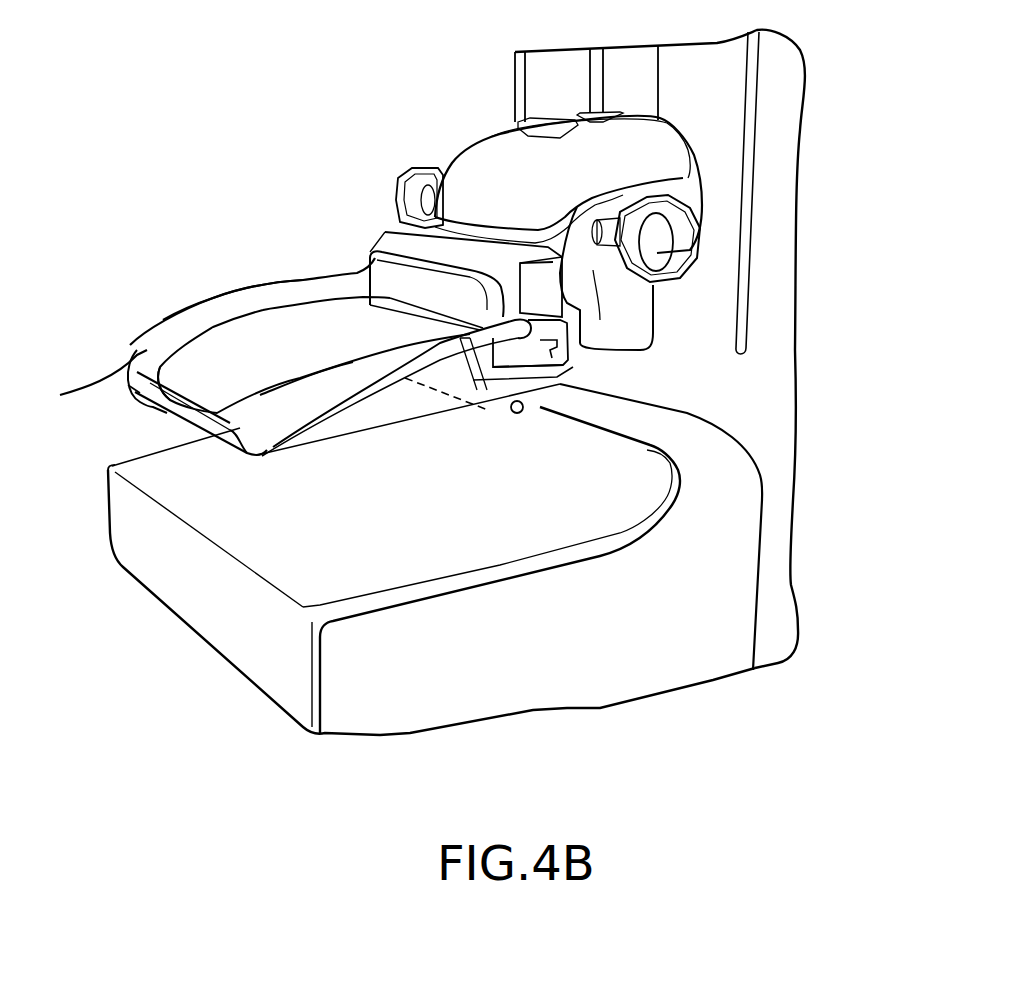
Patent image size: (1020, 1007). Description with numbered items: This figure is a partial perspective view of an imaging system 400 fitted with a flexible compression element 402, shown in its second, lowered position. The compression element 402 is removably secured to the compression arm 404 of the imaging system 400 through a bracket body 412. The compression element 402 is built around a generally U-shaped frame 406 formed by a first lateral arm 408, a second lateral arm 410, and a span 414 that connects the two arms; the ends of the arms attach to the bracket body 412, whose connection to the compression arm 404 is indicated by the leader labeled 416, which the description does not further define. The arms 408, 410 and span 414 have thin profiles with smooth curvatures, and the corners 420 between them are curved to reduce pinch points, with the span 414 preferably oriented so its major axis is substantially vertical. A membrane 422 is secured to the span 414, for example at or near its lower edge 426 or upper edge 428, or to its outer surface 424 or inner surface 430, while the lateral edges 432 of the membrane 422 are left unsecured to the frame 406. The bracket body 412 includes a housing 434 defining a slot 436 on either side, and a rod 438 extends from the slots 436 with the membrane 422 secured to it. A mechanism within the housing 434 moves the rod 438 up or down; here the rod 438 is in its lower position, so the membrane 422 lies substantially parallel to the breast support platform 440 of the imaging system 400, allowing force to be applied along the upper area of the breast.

The imaging system 400 is at (845, 113).
The flexible compression element 402 is at (205, 278).
The compression arm 404 is at (467, 162).
The generally U-shaped frame 406 is at (292, 300).
The first lateral arm 408 is at (190, 323).
The second lateral arm 410 is at (440, 357).
The bracket body 412 is at (565, 353).
The span 414 is at (137, 398).
The post lower end 416 is at (600, 329).
The corners 420 is at (142, 350).
The membrane 422 is at (293, 375).
The outer surface 424 is at (166, 412).
The lower edge 426 is at (178, 441).
The upper edge 428 is at (81, 381).
The inner surface 430 is at (222, 410).
The lateral edges 432 is at (437, 408).
The housing 434 is at (390, 330).
The slot 436 is at (510, 386).
The rod 438 is at (522, 412).
The breast support platform 440 is at (477, 503).